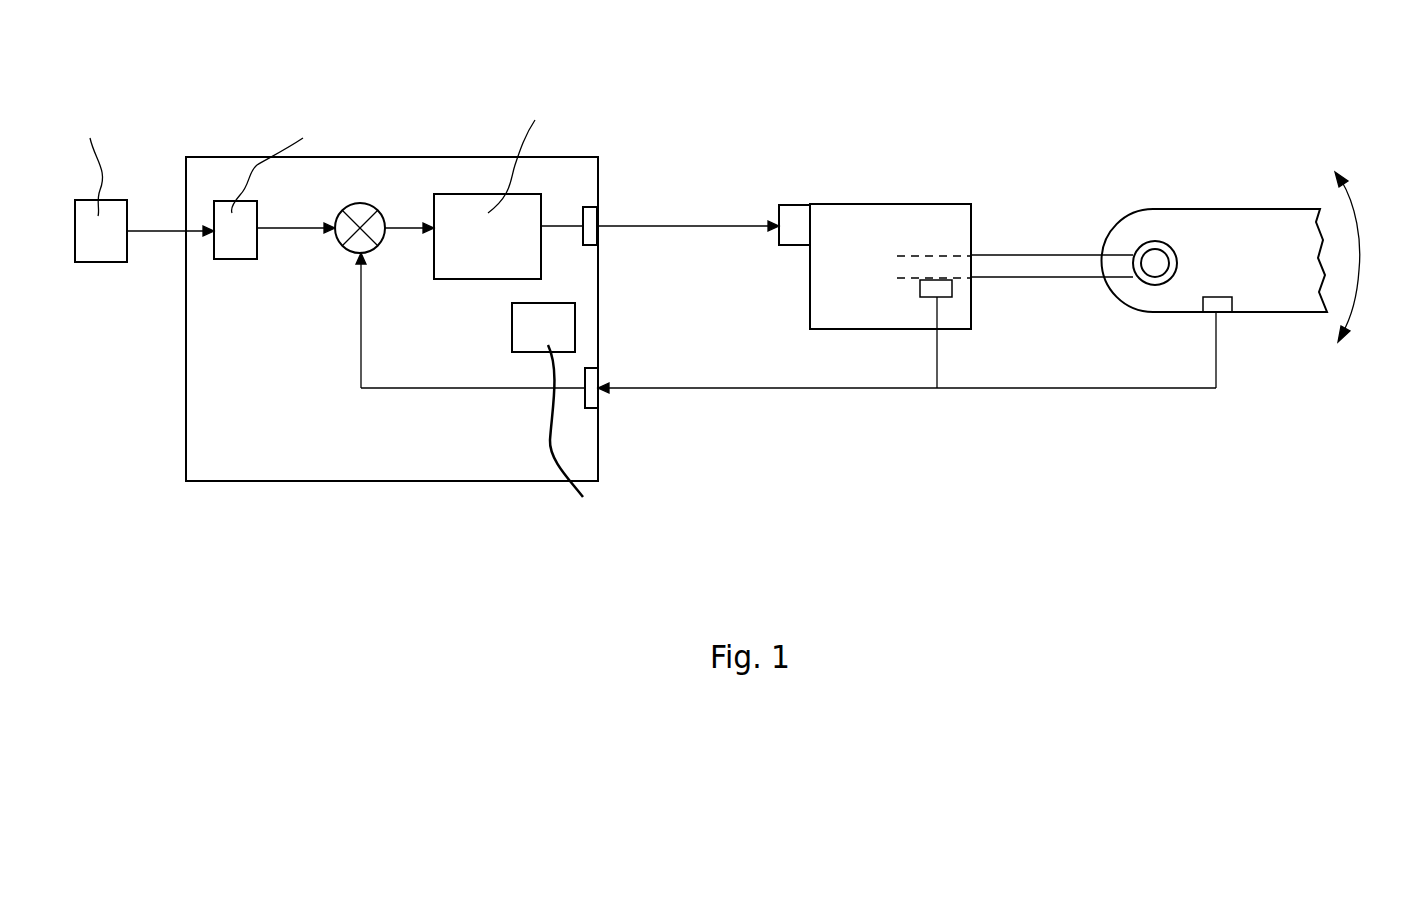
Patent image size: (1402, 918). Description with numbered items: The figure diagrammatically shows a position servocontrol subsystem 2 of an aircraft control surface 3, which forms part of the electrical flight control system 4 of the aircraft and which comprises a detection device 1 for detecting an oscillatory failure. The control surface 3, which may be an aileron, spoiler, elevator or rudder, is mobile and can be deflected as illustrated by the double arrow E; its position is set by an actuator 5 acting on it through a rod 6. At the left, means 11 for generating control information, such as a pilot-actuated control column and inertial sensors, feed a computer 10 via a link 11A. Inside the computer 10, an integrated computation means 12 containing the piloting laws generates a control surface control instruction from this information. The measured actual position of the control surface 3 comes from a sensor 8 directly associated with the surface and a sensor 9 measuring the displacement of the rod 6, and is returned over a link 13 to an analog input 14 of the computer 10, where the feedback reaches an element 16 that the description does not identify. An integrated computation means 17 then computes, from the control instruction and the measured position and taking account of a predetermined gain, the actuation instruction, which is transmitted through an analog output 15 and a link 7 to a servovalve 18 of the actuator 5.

The detection device 1 is at (578, 325).
The position servocontrol subsystem 2 is at (386, 552).
The control surface 3 is at (1268, 315).
The electrical flight control system 4 is at (745, 155).
The actuator 5 is at (853, 330).
The rod 6 is at (1075, 280).
The link 7 is at (688, 224).
The sensor 8 is at (1207, 318).
The sensor 9 is at (955, 288).
The computer 10 is at (524, 483).
The means for generating control information 11 is at (95, 265).
The link 11A is at (148, 225).
The integrated computation means 12 is at (235, 262).
The link 13 is at (777, 388).
The analog input 14 is at (600, 392).
The analog output 15 is at (600, 235).
The summing point 16 is at (338, 210).
The integrated computation means 17 is at (472, 285).
The servovalve 18 is at (793, 204).
The double arrow E is at (1360, 245).